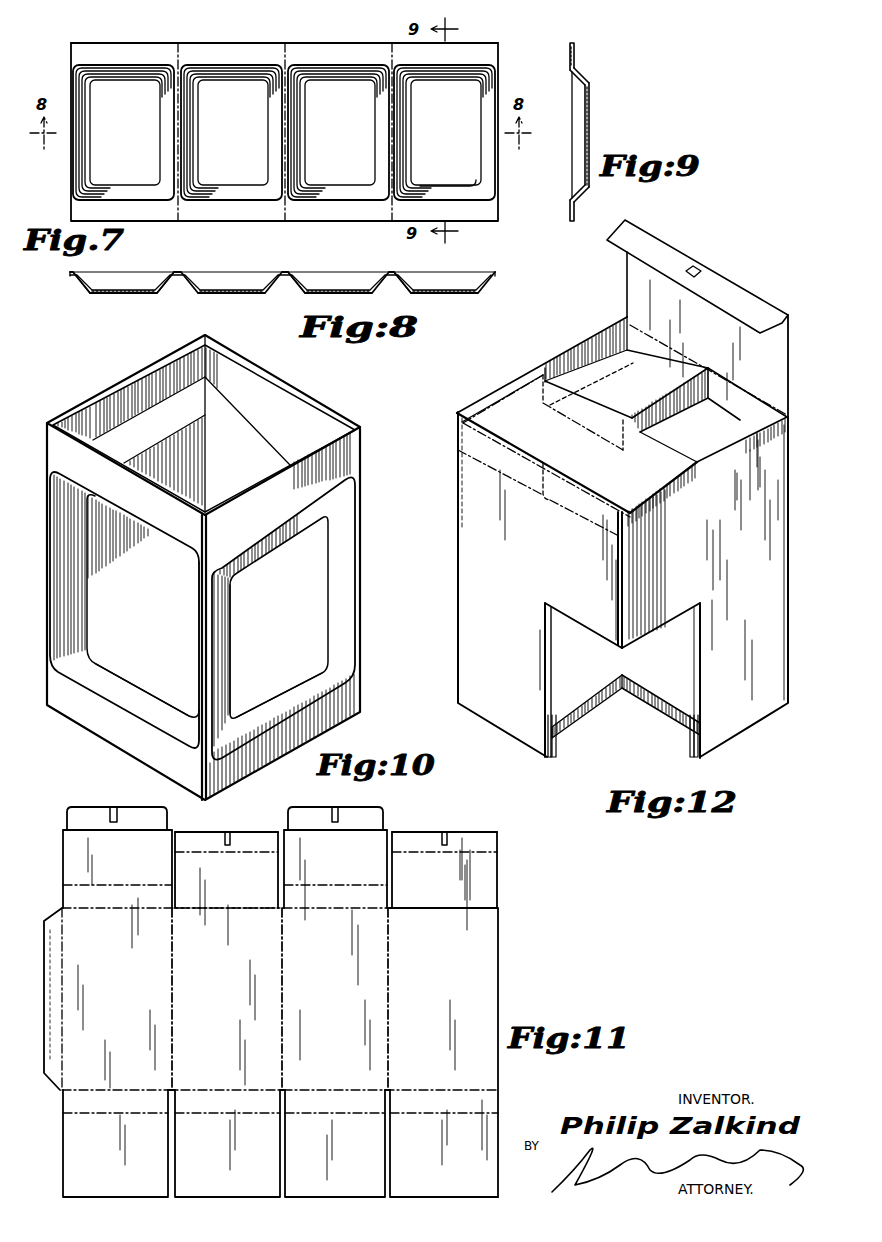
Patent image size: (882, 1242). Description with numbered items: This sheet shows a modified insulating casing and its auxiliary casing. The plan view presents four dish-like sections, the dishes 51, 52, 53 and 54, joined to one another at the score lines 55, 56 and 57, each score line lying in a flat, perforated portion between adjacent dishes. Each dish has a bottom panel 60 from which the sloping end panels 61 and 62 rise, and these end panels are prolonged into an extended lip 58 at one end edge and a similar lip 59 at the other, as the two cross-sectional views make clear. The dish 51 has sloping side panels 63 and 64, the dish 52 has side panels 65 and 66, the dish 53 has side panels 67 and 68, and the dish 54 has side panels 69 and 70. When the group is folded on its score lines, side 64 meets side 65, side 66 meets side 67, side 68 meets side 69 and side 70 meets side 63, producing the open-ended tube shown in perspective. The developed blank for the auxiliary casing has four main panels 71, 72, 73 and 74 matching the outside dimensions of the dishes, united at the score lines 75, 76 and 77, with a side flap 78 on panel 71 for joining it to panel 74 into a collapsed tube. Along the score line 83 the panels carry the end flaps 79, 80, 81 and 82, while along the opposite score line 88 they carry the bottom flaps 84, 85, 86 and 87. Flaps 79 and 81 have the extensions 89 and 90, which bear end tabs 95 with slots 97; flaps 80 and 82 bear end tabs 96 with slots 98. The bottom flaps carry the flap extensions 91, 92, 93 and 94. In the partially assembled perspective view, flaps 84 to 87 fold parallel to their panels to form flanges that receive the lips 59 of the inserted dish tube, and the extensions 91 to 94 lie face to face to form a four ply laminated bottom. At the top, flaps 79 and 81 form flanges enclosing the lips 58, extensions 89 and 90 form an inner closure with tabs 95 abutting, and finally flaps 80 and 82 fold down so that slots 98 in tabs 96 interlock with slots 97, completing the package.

In FIG. 7, the dish 51 is at (132, 37).
In FIG. 7, the dish 52 is at (226, 44).
In FIG. 7, the dish 53 is at (332, 44).
In FIG. 7, the dish 54 is at (486, 44).
In FIG. 7, the score line 55 is at (178, 44).
In FIG. 8, the score line 55 is at (178, 272).
In FIG. 7, the score line 56 is at (286, 44).
In FIG. 8, the score line 56 is at (285, 272).
In FIG. 7, the score line 57 is at (392, 44).
In FIG. 8, the score line 57 is at (392, 272).
In FIG. 7, the extended lip 58 is at (453, 52).
In FIG. 9, the extended lip 58 is at (576, 53).
In FIG. 10, the extended lip 58 is at (140, 385).
In FIG. 7, the extended lip 59 is at (322, 215).
In FIG. 9, the extended lip 59 is at (570, 210).
In FIG. 10, the extended lip 59 is at (118, 733).
In FIG. 7, the bottom panel 60 is at (285, 132).
In FIG. 8, the bottom panel 60 is at (122, 288).
In FIG. 9, the bottom panel 60 is at (586, 148).
In FIG. 10, the bottom panel 60 is at (207, 568).
In FIG. 7, the sloping end panel 61 is at (78, 72).
In FIG. 9, the sloping end panel 61 is at (575, 78).
In FIG. 10, the sloping end panel 61 is at (168, 416).
In FIG. 7, the sloping end panel 62 is at (453, 193).
In FIG. 9, the sloping end panel 62 is at (580, 193).
In FIG. 10, the sloping end panel 62 is at (122, 695).
In FIG. 7, the sloping side panel 63 is at (84, 157).
In FIG. 8, the sloping side panel 63 is at (84, 275).
In FIG. 7, the sloping side panel 64 is at (165, 146).
In FIG. 8, the sloping side panel 64 is at (160, 290).
In FIG. 7, the sloping side panel 65 is at (190, 161).
In FIG. 10, the sloping side panel 65 is at (72, 586).
In FIG. 7, the sloping side panel 66 is at (272, 153).
In FIG. 10, the sloping side panel 66 is at (200, 640).
In FIG. 7, the sloping side panel 67 is at (297, 158).
In FIG. 8, the sloping side panel 67 is at (300, 283).
In FIG. 10, the sloping side panel 67 is at (212, 640).
In FIG. 7, the sloping side panel 68 is at (378, 153).
In FIG. 10, the sloping side panel 68 is at (340, 533).
In FIG. 7, the sloping side panel 69 is at (404, 158).
In FIG. 8, the sloping side panel 69 is at (408, 282).
In FIG. 7, the sloping side panel 70 is at (484, 156).
In FIG. 11, the main panel 71 is at (117, 964).
In FIG. 12, the main panel 72 is at (540, 584).
In FIG. 11, the main panel 72 is at (227, 979).
In FIG. 12, the main panel 73 is at (705, 587).
In FIG. 11, the main panel 73 is at (335, 964).
In FIG. 11, the main panel 74 is at (443, 1017).
In FIG. 11, the score line 75 is at (172, 1032).
In FIG. 11, the score line 76 is at (283, 1028).
In FIG. 11, the score line 77 is at (389, 1038).
In FIG. 11, the side flap 78 is at (48, 968).
In FIG. 12, the end flap 79 is at (606, 330).
In FIG. 11, the end flap 79 is at (117, 893).
In FIG. 12, the end flap 80 is at (577, 449).
In FIG. 11, the end flap 80 is at (226, 870).
In FIG. 11, the end flap 81 is at (335, 896).
In FIG. 12, the end flap 82 is at (709, 390).
In FIG. 11, the end flap 82 is at (444, 870).
In FIG. 11, the score line 83 is at (238, 910).
In FIG. 11, the bottom flap 84 is at (115, 1101).
In FIG. 12, the bottom flap 85 is at (558, 744).
In FIG. 11, the bottom flap 85 is at (227, 1101).
In FIG. 12, the bottom flap 86 is at (690, 740).
In FIG. 11, the bottom flap 86 is at (335, 1101).
In FIG. 11, the bottom flap 87 is at (444, 1101).
In FIG. 11, the score line 88 is at (236, 1091).
In FIG. 12, the flap extension 89 is at (626, 384).
In FIG. 11, the flap extension 89 is at (117, 869).
In FIG. 12, the flap extension 90 is at (742, 415).
In FIG. 11, the flap extension 90 is at (335, 869).
In FIG. 12, the flap extension 91 is at (616, 682).
In FIG. 11, the flap extension 91 is at (115, 1143).
In FIG. 12, the flap extension 92 is at (588, 708).
In FIG. 11, the flap extension 92 is at (227, 1143).
In FIG. 12, the flap extension 93 is at (660, 705).
In FIG. 11, the flap extension 93 is at (335, 1143).
In FIG. 12, the flap extension 94 is at (638, 702).
In FIG. 11, the flap extension 94 is at (444, 1143).
In FIG. 12, the end tab 95 is at (670, 400).
In FIG. 11, the end tab 95 is at (129, 822).
In FIG. 12, the end tab 96 is at (738, 298).
In FIG. 11, the end tab 96 is at (190, 840).
In FIG. 12, the slot 97 is at (661, 441).
In FIG. 11, the slot 97 is at (110, 806).
In FIG. 12, the slot 98 is at (687, 280).
In FIG. 11, the slot 98 is at (228, 832).